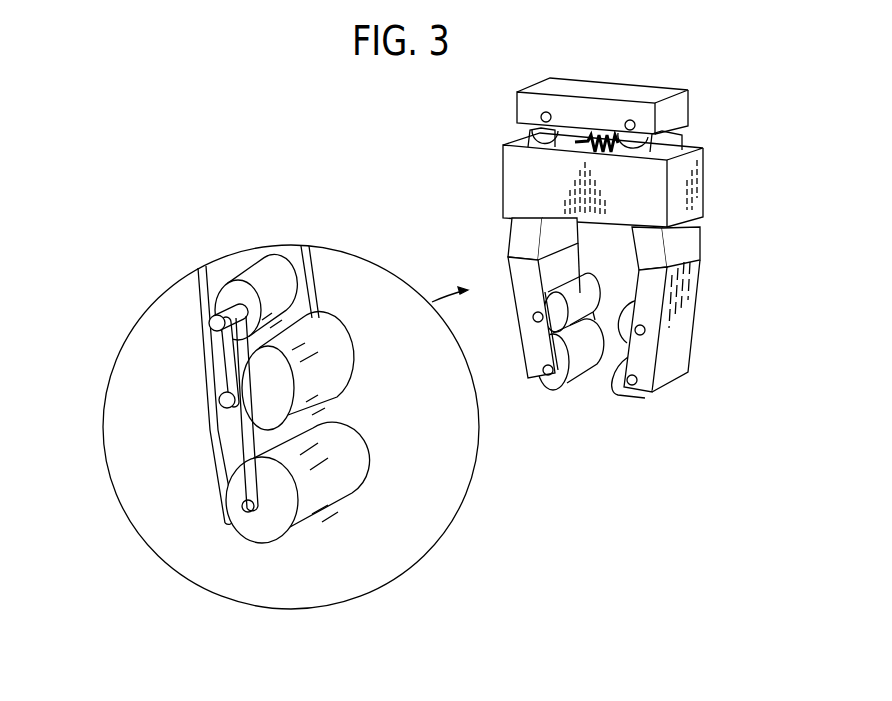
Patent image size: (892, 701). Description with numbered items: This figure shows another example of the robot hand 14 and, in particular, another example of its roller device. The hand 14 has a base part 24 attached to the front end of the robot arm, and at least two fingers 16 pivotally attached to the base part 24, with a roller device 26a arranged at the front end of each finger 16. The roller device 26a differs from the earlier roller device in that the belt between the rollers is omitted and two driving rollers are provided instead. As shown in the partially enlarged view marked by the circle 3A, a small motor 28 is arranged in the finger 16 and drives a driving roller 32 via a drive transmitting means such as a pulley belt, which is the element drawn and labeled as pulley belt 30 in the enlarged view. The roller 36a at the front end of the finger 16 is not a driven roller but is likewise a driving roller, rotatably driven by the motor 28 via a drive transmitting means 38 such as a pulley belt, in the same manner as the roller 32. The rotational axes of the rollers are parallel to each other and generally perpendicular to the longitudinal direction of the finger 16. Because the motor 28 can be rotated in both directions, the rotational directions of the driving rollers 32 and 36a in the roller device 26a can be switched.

The circle 3A is at (460, 507).
The hand 14 is at (483, 183).
The finger 16 is at (197, 300).
The base part 24 is at (677, 110).
The roller device 26a is at (612, 415).
The motor 28 is at (275, 272).
The belt 30 is at (218, 357).
The driving roller 32 is at (322, 357).
The roller 36a is at (328, 462).
The drive transmitting means 38 is at (247, 443).